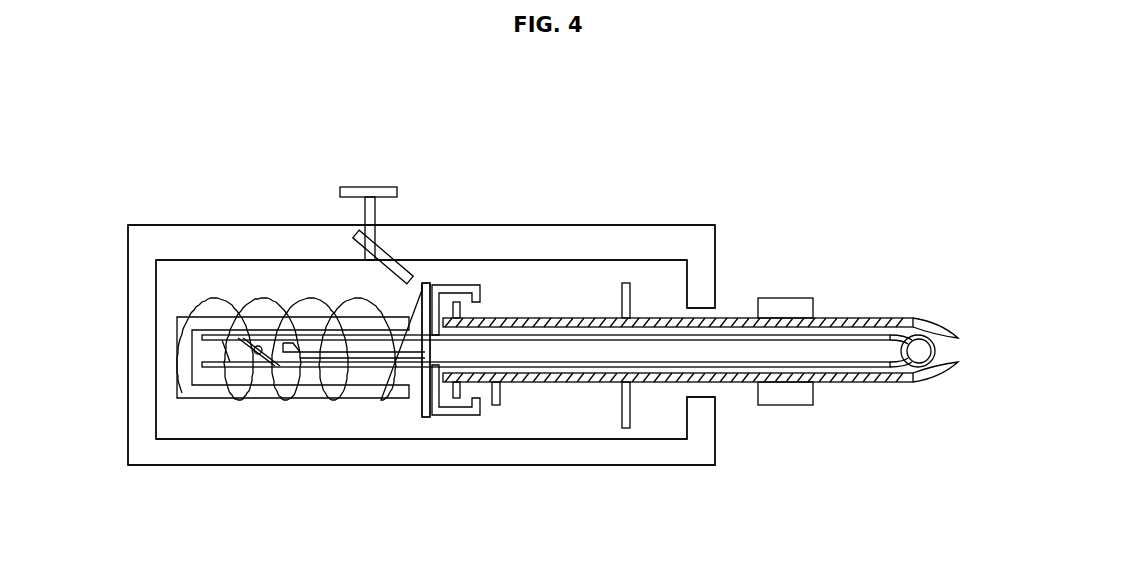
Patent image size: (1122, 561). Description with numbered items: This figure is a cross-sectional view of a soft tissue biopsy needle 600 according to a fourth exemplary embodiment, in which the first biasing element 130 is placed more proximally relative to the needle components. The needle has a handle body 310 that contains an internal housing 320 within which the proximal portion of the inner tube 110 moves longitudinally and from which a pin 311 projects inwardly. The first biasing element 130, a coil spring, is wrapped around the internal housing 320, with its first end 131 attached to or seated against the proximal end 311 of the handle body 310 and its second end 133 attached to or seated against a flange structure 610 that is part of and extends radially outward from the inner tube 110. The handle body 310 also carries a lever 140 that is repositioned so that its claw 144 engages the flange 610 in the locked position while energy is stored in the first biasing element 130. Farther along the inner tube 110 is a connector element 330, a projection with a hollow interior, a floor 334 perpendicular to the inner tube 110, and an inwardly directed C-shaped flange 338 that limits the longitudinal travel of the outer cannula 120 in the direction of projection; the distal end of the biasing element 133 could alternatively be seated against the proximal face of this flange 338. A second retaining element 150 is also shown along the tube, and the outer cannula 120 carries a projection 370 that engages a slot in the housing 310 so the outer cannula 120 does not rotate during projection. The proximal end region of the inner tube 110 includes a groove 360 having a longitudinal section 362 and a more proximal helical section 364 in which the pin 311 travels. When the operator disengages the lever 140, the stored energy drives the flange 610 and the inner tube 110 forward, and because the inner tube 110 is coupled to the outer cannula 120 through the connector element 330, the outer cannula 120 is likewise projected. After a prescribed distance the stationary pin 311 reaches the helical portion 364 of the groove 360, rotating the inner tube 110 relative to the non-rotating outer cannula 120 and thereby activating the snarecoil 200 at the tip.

The soft tissue biopsy needle 600 is at (543, 160).
The handle body 310 is at (590, 230).
The pin 311 is at (253, 333).
The first end of the biasing element 131 is at (163, 362).
The internal housing 320 is at (283, 318).
The first biasing element 130 is at (300, 368).
The longitudinal groove section 362 is at (380, 355).
The groove 360 is at (277, 335).
The helical groove section 364 is at (232, 350).
The lever 140 is at (373, 188).
The claw 144 is at (414, 276).
The second end of the biasing element 133 is at (417, 298).
The floor 334 is at (432, 390).
The flange structure 610 is at (424, 412).
The flange member 338 is at (481, 293).
The connector element 330 is at (467, 417).
The inner tube 110 is at (848, 338).
The second retaining element 150 is at (627, 298).
The projection 370 is at (499, 394).
The outer cannula 120 is at (838, 382).
The snarecoil 200 is at (908, 322).